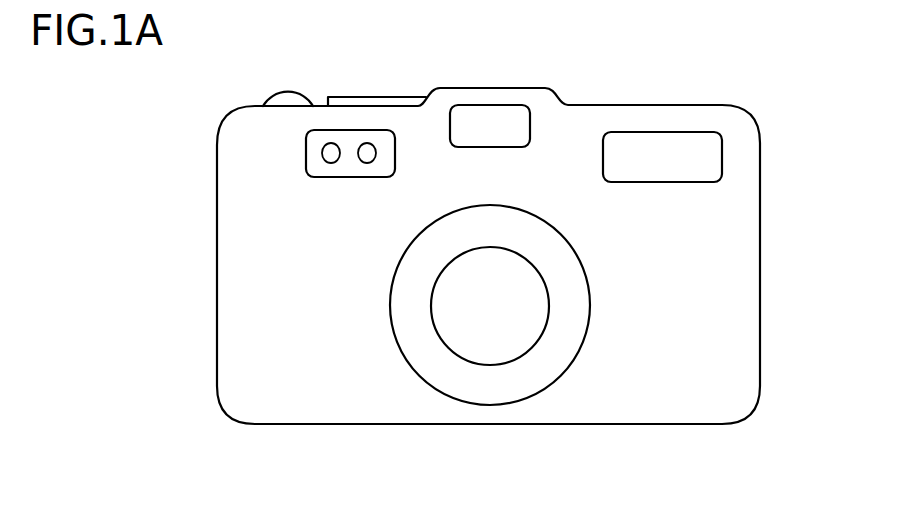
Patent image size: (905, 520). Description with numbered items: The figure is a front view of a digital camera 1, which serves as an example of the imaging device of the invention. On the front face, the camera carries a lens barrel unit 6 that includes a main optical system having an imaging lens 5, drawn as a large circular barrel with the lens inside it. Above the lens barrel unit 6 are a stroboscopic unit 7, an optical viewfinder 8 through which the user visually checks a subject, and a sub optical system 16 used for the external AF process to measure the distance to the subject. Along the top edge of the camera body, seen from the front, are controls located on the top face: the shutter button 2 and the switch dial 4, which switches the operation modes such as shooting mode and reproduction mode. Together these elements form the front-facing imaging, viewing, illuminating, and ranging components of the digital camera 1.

The digital camera 1 is at (786, 68).
The shutter button 2 is at (288, 92).
The switch dial 4 is at (382, 97).
The imaging lens 5 is at (470, 328).
The lens barrel unit 6 is at (538, 373).
The stroboscopic unit 7 is at (675, 132).
The optical viewfinder 8 is at (488, 105).
The sub optical system 16 is at (305, 155).